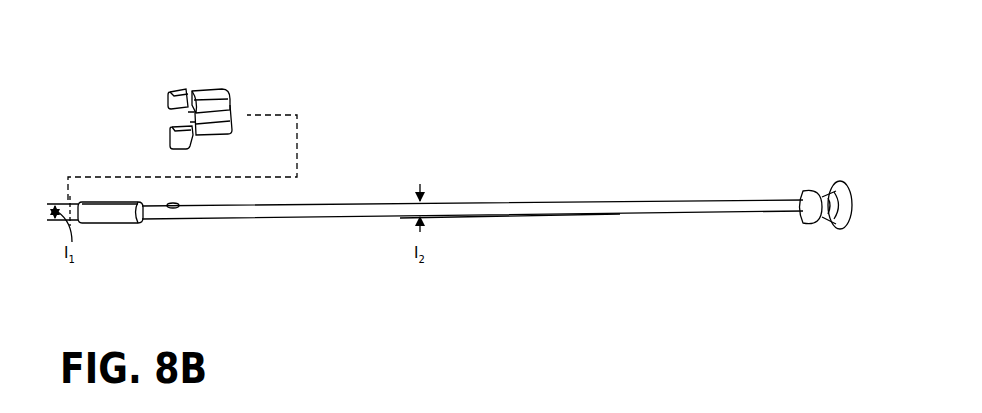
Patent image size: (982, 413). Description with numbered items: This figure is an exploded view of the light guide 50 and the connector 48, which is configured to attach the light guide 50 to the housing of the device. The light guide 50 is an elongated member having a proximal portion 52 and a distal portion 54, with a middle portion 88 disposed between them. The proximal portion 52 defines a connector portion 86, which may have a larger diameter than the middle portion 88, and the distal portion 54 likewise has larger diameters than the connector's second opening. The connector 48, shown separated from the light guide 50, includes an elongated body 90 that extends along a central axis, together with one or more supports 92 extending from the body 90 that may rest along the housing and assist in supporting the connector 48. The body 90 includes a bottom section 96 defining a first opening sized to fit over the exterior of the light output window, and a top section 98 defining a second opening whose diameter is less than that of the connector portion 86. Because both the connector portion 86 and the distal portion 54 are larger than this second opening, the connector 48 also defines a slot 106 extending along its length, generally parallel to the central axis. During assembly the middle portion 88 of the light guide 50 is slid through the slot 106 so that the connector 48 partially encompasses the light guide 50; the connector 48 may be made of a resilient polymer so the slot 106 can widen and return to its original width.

The connector 48 is at (203, 97).
The light guide 50 is at (543, 208).
The proximal portion 52 is at (110, 226).
The distal portion 54 is at (826, 226).
The connector portion 86 is at (107, 199).
The middle portion 88 is at (512, 218).
The elongated body 90 is at (205, 89).
The support 92 is at (187, 88).
The bottom section 96 is at (189, 151).
The top section 98 is at (232, 108).
The slot 106 is at (200, 117).